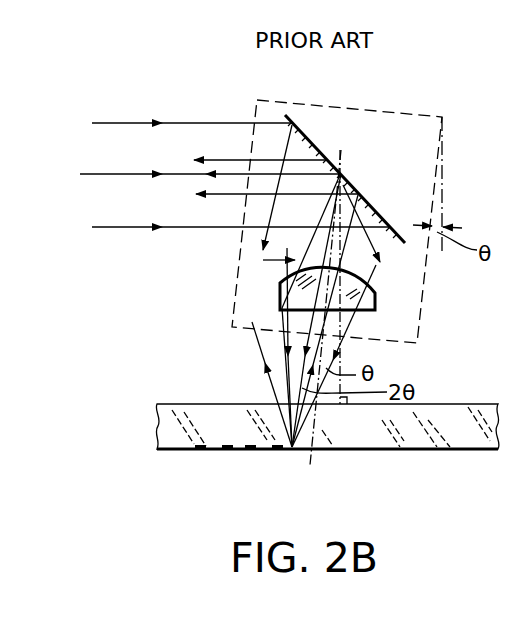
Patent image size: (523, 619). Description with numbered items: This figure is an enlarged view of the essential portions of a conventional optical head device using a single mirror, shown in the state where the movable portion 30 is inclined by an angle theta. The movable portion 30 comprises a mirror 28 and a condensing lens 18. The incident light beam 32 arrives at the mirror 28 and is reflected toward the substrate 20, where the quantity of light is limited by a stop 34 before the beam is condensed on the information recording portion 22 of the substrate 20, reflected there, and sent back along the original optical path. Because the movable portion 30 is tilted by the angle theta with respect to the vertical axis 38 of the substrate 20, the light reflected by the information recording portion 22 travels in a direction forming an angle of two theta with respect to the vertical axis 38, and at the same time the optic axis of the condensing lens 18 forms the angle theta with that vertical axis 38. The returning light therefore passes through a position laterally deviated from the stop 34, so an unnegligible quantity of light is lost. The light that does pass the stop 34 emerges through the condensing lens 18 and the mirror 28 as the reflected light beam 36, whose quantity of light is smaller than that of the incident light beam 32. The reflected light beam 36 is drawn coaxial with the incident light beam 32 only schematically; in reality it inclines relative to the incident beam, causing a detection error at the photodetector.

The condensing lens 18 is at (380, 310).
The substrate 20 is at (460, 408).
The information recording portion 22 is at (227, 452).
The mirror 28 is at (323, 140).
The movable portion 30 is at (442, 165).
The incident light beam 32 is at (120, 230).
The stop 34 is at (373, 273).
The reflected light beam 36 is at (223, 196).
The vertical axis 38 is at (342, 345).